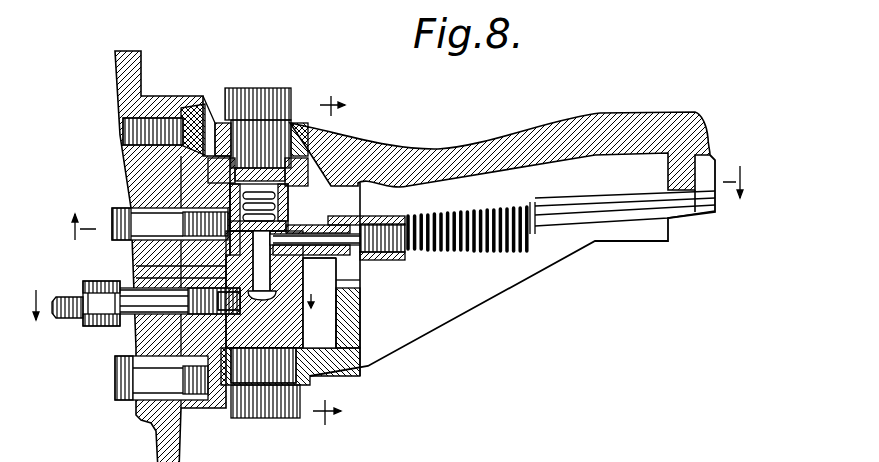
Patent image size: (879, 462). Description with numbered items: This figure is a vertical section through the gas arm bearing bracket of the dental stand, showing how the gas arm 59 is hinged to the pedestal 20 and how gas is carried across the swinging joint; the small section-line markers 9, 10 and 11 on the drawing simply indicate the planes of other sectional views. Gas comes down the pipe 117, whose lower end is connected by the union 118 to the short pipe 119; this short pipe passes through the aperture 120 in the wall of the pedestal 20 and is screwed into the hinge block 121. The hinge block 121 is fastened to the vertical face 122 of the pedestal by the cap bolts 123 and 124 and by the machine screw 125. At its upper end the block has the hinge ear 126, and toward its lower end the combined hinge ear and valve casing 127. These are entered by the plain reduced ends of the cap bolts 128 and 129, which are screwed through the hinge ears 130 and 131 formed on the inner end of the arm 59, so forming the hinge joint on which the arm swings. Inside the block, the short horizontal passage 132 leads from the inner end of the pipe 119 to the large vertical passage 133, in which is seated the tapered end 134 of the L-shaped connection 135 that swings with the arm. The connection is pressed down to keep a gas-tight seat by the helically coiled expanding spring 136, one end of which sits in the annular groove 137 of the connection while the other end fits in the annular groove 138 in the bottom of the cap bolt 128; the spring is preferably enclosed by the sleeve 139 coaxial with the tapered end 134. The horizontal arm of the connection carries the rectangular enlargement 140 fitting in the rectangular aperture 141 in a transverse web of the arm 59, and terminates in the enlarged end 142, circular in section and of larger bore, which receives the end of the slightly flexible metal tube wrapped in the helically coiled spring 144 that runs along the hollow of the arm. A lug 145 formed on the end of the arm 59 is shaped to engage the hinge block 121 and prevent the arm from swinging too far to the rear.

The section line 9 is at (405, 203).
The section line 10 is at (181, 295).
The section line 11 is at (329, 261).
The pedestal 20 is at (152, 440).
The arm 59 is at (525, 122).
The pipe 117 is at (47, 308).
The union 118 is at (88, 316).
The short pipe 119 is at (113, 312).
The aperture 120 is at (127, 276).
The hinge block 121 is at (133, 270).
The vertical face 122 is at (170, 100).
The cap bolt 123 is at (107, 383).
The cap bolt 124 is at (113, 216).
The machine screw 125 is at (117, 126).
The hinge ear 126 is at (337, 133).
The combined hinge ear and valve casing 127 is at (348, 331).
The cap bolt 128 is at (262, 70).
The cap bolt 129 is at (263, 410).
The hinge ear 130 is at (288, 113).
The hinge ear 131 is at (297, 357).
The short horizontal passage 132 is at (217, 302).
The large vertical passage 133 is at (348, 300).
The tapered end 134 is at (345, 272).
The L-shaped connection 135 is at (283, 218).
The helically coiled expanding spring 136 is at (303, 194).
The annular groove 137 is at (280, 262).
The annular groove 138 is at (230, 173).
The sleeve 139 is at (230, 193).
The rectangular enlargement 140 is at (335, 250).
The rectangular aperture 141 is at (376, 204).
The enlarged end 142 is at (424, 206).
The helically coiled spring 144 is at (490, 232).
The lug 145 is at (340, 316).